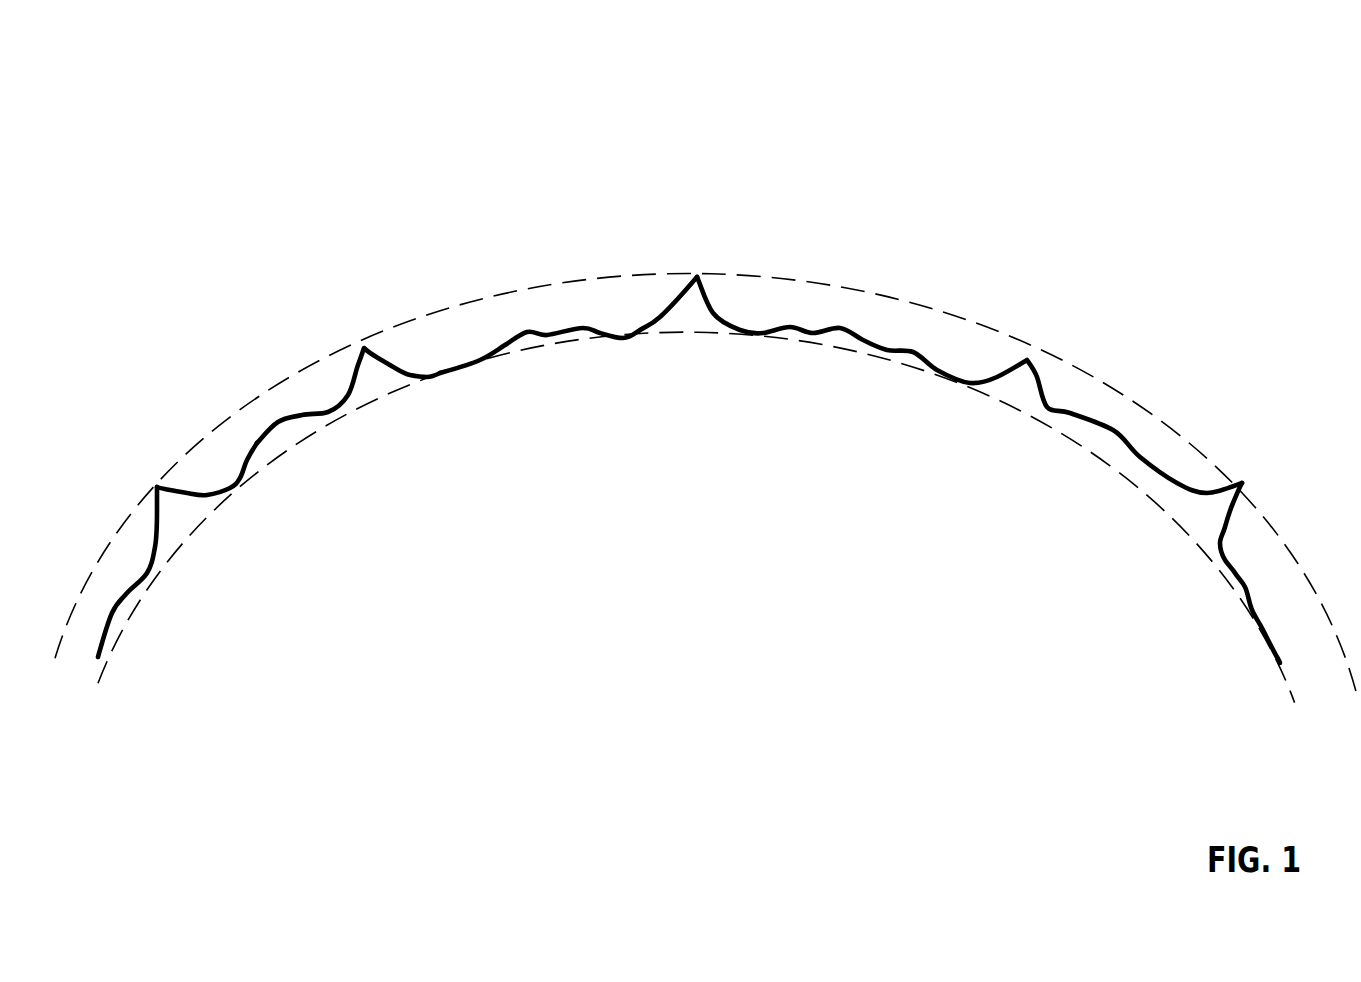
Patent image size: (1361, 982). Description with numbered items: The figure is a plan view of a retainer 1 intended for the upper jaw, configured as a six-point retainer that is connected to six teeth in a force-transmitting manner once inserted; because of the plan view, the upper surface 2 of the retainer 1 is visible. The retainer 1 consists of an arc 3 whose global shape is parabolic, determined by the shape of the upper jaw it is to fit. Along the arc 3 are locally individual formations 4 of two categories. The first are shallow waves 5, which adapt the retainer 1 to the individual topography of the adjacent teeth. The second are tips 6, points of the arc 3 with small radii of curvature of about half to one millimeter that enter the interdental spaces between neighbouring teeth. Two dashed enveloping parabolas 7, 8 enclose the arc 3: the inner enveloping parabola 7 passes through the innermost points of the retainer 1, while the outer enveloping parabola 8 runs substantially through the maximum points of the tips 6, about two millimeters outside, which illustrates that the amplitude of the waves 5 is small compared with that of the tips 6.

The retainer 1 is at (705, 376).
The upper surface 2 is at (528, 330).
The arc 3 is at (705, 376).
The formations 4 is at (352, 342).
The shallow waves 5 is at (253, 440).
The tips 6 is at (1242, 483).
The inner enveloping parabola 7 is at (385, 395).
The outer enveloping parabola 8 is at (640, 273).